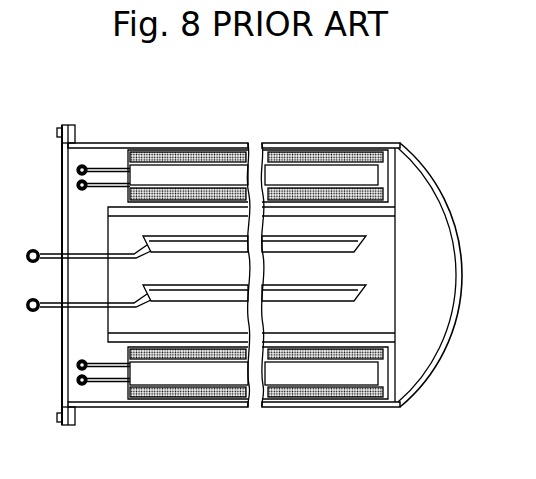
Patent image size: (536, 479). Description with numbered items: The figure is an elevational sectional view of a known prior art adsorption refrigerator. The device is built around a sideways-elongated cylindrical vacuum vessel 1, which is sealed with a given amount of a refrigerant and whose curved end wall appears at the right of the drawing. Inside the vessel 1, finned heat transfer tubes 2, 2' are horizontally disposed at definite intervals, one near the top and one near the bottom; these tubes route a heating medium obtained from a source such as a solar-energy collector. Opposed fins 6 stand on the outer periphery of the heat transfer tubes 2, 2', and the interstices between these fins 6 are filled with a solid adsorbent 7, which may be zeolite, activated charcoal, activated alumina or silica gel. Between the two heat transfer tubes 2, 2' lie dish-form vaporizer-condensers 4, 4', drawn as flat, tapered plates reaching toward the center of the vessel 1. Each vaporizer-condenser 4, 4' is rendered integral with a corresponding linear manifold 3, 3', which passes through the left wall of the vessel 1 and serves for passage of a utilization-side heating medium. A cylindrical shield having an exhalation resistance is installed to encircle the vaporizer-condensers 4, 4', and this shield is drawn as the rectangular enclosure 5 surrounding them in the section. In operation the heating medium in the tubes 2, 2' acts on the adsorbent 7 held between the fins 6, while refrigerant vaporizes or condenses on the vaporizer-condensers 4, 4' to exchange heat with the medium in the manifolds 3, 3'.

The vacuum vessel 1 is at (436, 181).
The finned heat transfer tube 2 is at (162, 144).
The finned heat transfer tube 2' is at (162, 405).
The linear manifold 3 is at (84, 219).
The linear manifold 3' is at (83, 336).
The dish-form vaporizer-condenser 4 is at (254, 259).
The dish-form vaporizer-condenser 4' is at (254, 307).
The central core block 5 is at (373, 331).
The fins 6 is at (222, 152).
The solid adsorbent 7 is at (291, 152).